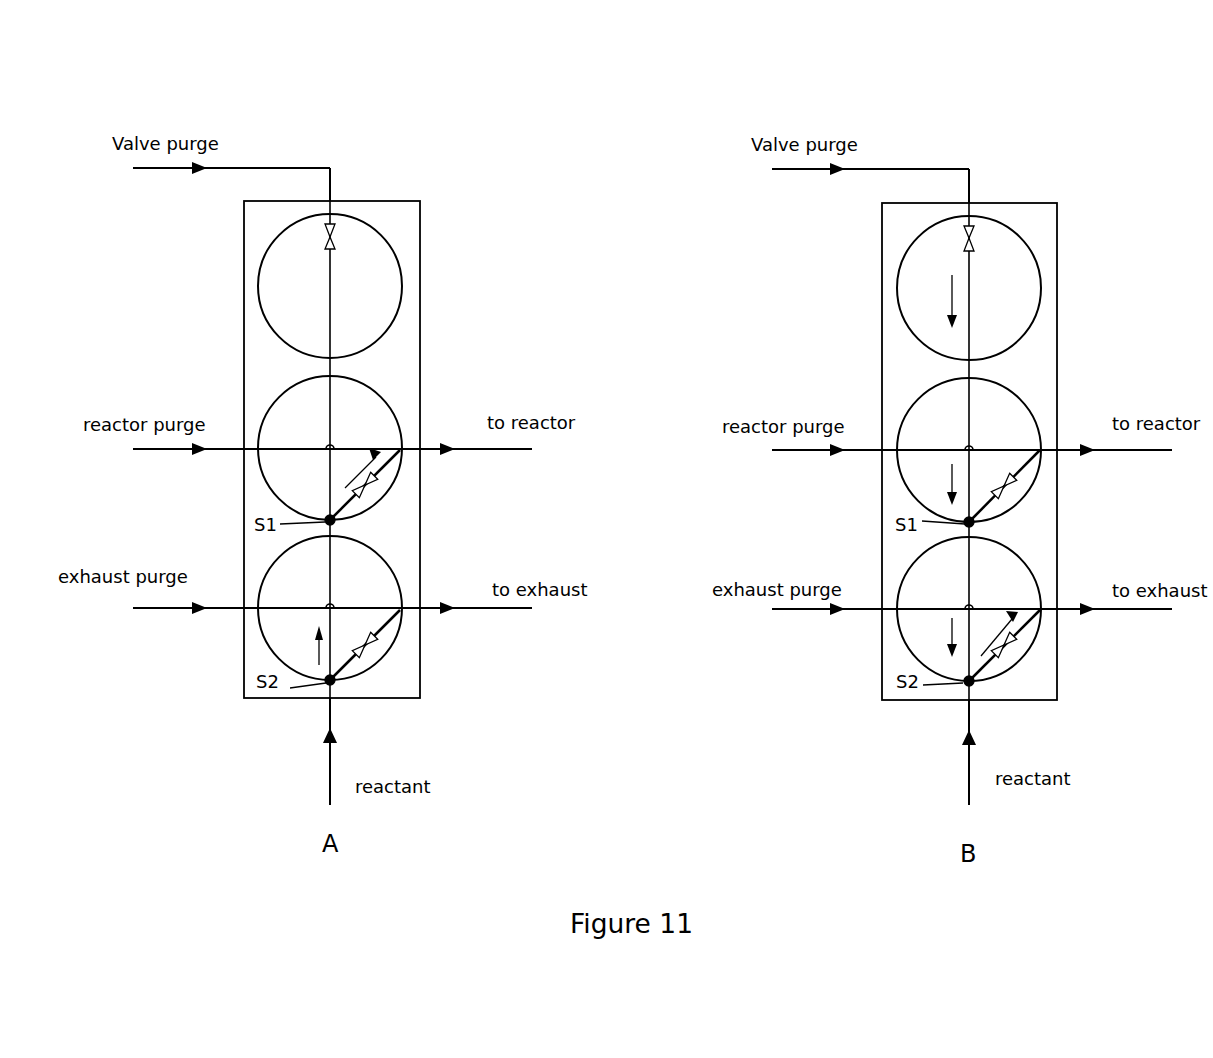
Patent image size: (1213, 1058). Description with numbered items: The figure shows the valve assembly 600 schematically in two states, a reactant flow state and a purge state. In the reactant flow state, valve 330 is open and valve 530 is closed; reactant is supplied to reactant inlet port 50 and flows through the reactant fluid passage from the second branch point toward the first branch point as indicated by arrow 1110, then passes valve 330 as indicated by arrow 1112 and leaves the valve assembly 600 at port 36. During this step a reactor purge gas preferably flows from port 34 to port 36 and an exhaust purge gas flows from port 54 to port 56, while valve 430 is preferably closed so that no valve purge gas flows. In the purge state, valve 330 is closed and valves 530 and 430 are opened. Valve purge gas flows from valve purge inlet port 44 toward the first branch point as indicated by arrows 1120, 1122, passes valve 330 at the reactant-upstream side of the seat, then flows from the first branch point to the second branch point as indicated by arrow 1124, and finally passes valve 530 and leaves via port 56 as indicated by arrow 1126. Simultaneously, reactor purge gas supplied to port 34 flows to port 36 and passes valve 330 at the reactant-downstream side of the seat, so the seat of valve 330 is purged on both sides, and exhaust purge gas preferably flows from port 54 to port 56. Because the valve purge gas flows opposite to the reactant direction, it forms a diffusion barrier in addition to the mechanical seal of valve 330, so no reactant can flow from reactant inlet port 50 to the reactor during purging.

In FIG. 11A, the valve assembly 600 is at (489, 286).
In FIG. 11B, the valve assembly 600 is at (1128, 288).
In FIG. 11A, the valve purge inlet port 44 is at (328, 198).
In FIG. 11B, the valve purge inlet port 44 is at (967, 200).
In FIG. 11A, the valve 430 is at (337, 232).
In FIG. 11B, the valve 430 is at (976, 234).
In FIG. 11A, the port 34 is at (245, 447).
In FIG. 11B, the port 34 is at (883, 448).
In FIG. 11A, the port 36 is at (420, 446).
In FIG. 11B, the port 36 is at (1060, 447).
In FIG. 11A, the valve 330 is at (375, 483).
In FIG. 11B, the valve 330 is at (1013, 483).
In FIG. 11A, the port 54 is at (243, 612).
In FIG. 11B, the port 54 is at (883, 608).
In FIG. 11A, the port 56 is at (420, 606).
In FIG. 11B, the port 56 is at (1060, 606).
In FIG. 11A, the valve 530 is at (372, 645).
In FIG. 11B, the valve 530 is at (1045, 645).
In FIG. 11A, the reactant inlet port 50 is at (328, 699).
In FIG. 11B, the reactant inlet port 50 is at (967, 701).
In FIG. 11A, the arrow 1110 is at (313, 640).
In FIG. 11A, the arrow 1112 is at (357, 470).
In FIG. 11B, the arrow 1120 is at (952, 295).
In FIG. 11B, the arrow 1122 is at (952, 480).
In FIG. 11B, the arrow 1124 is at (952, 628).
In FIG. 11B, the arrow 1126 is at (1017, 633).